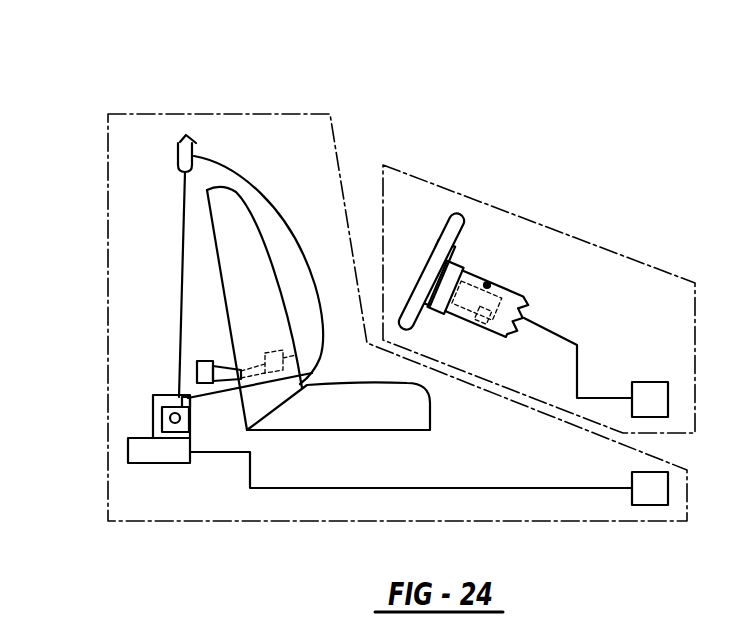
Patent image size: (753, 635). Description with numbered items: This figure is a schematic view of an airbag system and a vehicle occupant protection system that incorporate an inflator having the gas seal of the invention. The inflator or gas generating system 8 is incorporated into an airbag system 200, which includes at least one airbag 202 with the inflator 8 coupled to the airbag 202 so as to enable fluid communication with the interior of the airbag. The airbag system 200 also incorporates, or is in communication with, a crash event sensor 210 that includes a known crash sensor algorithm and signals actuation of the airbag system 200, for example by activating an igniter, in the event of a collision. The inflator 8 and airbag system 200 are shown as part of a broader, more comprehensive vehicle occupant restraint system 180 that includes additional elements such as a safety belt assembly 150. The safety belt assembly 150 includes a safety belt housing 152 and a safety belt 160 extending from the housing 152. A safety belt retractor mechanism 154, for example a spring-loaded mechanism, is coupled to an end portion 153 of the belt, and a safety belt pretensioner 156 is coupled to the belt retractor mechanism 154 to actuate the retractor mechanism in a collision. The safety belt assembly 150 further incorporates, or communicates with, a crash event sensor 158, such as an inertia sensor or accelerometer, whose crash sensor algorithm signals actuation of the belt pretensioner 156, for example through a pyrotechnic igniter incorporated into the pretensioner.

The safety belt assembly 150 is at (288, 110).
The safety belt housing 152 is at (160, 418).
The end portion 153 is at (183, 261).
The safety belt retractor mechanism 154 is at (154, 397).
The safety belt pretensioner 156 is at (148, 464).
The crash event sensor 158 is at (648, 506).
The safety belt 160 is at (228, 167).
The vehicle occupant restraint system 180 is at (550, 75).
The airbag system 200 is at (627, 253).
The airbag 202 is at (457, 238).
The inflator 8 is at (487, 285).
The crash event sensor 210 is at (650, 382).